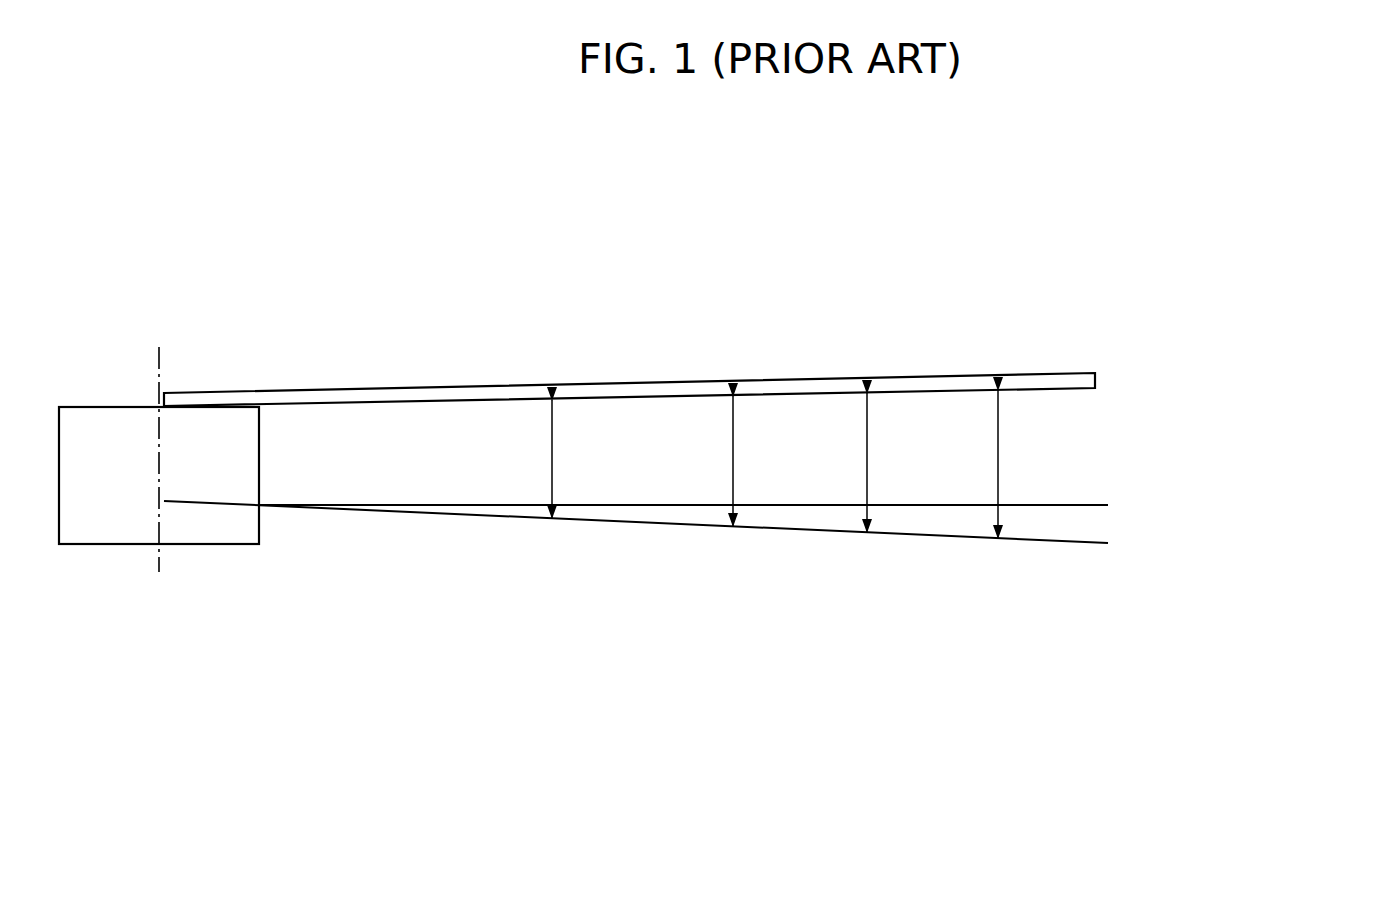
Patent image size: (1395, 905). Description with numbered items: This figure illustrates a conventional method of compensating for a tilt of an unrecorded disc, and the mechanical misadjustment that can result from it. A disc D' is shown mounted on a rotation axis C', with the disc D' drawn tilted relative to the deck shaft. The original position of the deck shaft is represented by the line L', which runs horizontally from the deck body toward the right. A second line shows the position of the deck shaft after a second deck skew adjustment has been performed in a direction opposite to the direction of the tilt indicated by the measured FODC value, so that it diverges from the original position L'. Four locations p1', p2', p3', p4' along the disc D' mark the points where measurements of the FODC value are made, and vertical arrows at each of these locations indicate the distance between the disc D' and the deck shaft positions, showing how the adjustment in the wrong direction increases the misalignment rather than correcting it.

The rotation axis of the disc C' is at (189, 438).
The disc D' is at (629, 360).
The original position of the deck shaft L' is at (815, 505).
The location of the disc where a FODC value is measured p1' is at (557, 515).
The location of the disc where a FODC value is measured p2' is at (739, 513).
The location of the disc where a FODC value is measured p3' is at (873, 512).
The location of the disc where a FODC value is measured p4' is at (1004, 510).